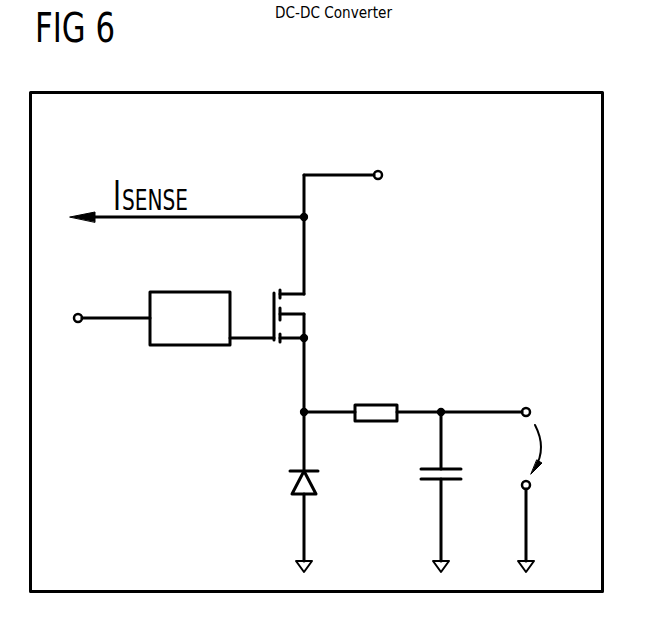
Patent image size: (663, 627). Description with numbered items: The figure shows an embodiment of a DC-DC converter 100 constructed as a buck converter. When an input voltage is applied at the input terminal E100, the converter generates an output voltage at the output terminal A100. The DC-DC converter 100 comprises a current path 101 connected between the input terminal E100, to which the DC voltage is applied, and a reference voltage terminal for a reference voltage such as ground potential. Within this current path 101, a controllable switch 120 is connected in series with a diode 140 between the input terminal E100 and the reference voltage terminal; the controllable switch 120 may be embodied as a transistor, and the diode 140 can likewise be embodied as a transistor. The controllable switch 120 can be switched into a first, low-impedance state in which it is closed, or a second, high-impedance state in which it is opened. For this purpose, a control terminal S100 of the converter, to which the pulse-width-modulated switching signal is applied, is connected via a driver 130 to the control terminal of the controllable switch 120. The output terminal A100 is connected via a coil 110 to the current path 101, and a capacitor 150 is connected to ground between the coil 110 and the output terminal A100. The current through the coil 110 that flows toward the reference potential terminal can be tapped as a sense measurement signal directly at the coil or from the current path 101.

The DC-DC converter 100 is at (313, 90).
The current path 101 is at (303, 383).
The coil 110 is at (375, 405).
The controllable switch 120 is at (298, 308).
The driver 130 is at (190, 291).
The diode 140 is at (295, 472).
The capacitor 150 is at (432, 483).
The input terminal E100 is at (378, 170).
The control terminal S100 is at (78, 313).
The output terminal A100 is at (527, 407).